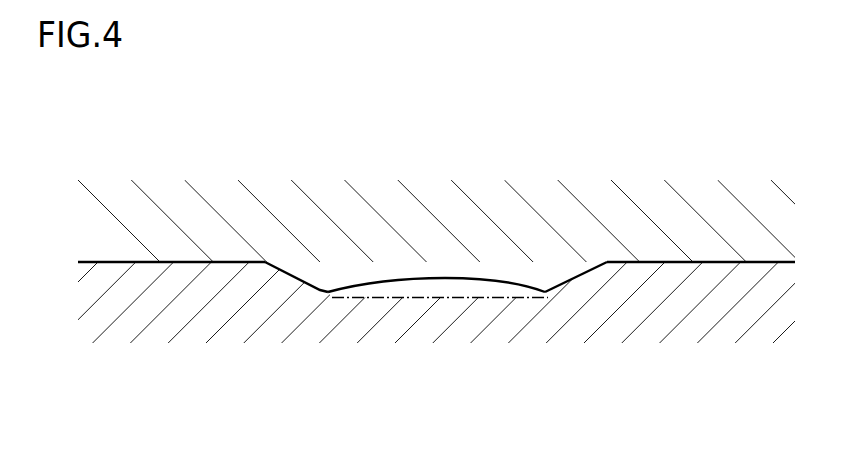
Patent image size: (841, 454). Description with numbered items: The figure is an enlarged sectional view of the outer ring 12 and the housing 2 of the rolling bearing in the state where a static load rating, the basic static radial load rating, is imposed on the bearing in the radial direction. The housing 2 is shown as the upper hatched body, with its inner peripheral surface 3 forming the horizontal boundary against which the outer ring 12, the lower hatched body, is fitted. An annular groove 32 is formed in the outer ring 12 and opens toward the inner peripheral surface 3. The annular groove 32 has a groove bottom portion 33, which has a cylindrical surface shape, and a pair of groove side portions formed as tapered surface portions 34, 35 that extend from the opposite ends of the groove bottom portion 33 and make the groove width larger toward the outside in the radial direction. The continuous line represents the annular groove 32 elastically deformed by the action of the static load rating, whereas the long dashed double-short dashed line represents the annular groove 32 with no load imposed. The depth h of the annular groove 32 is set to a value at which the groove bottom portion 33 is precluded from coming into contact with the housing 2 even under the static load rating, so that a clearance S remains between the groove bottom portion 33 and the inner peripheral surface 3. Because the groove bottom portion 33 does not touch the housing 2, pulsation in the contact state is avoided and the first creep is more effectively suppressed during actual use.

The housing 2 is at (110, 243).
The inner peripheral surface 3 is at (427, 263).
The outer ring 12 is at (685, 304).
The annular groove 32 is at (507, 282).
The groove bottom portion 33 is at (392, 282).
The tapered surface portion 34 is at (317, 284).
The tapered surface portion 35 is at (569, 280).
The clearance S is at (437, 267).
The depth h is at (455, 230).